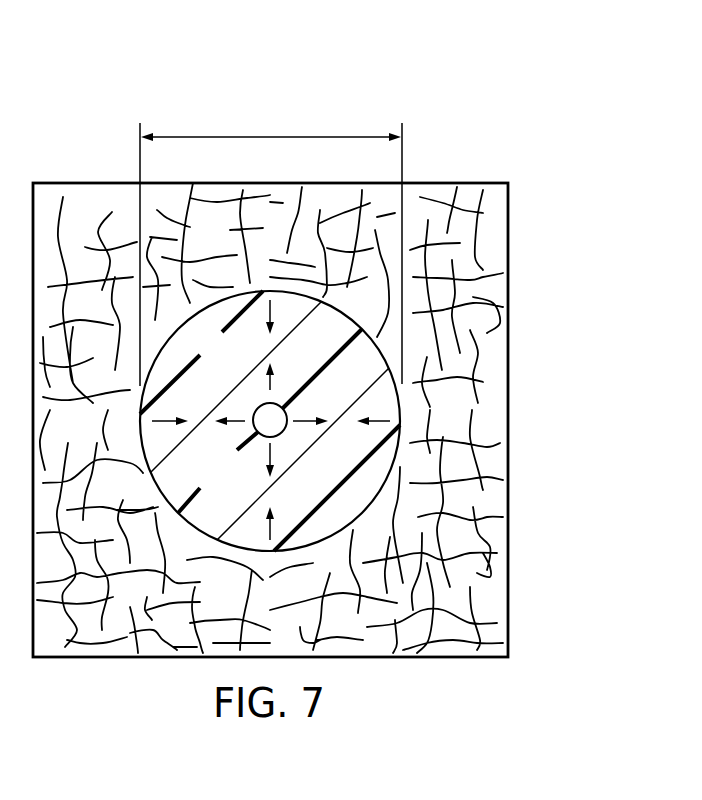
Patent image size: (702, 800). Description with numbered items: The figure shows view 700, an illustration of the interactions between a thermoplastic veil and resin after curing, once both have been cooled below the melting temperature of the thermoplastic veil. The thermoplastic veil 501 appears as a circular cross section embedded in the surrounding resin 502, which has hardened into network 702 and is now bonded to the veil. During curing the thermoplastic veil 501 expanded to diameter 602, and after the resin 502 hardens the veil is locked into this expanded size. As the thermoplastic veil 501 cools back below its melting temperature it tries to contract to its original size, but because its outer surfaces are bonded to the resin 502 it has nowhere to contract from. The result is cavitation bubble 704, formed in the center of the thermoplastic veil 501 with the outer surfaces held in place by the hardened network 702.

The view 700 is at (380, 67).
The resin 502 is at (96, 190).
The diameter 602 is at (270, 137).
The network 702 is at (495, 349).
The thermoplastic veil 501 is at (240, 482).
The cavitation bubble 704 is at (265, 415).